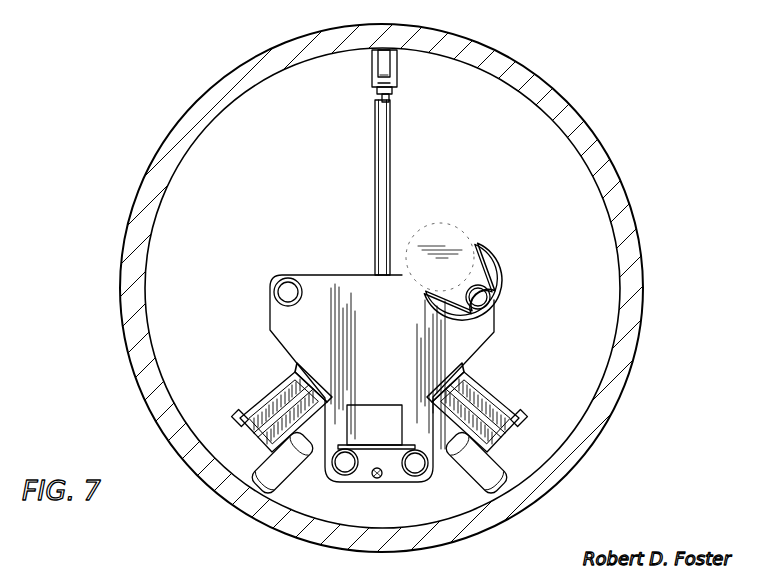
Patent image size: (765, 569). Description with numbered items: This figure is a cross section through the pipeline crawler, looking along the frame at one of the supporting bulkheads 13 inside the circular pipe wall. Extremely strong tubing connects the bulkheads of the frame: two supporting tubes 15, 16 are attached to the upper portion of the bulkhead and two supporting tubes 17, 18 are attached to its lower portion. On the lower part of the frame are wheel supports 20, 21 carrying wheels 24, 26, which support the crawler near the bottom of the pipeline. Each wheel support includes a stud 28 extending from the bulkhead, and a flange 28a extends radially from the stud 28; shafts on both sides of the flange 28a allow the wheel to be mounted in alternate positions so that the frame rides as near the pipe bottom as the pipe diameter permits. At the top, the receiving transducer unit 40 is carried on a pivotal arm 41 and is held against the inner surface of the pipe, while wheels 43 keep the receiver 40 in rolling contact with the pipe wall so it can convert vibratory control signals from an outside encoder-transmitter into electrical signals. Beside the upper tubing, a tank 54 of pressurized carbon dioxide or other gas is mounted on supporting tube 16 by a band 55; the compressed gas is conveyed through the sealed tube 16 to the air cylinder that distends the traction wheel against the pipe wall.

The supporting bulkhead 13 is at (280, 312).
The supporting tube 15 is at (287, 291).
The supporting tube 16 is at (483, 300).
The supporting tube 17 is at (343, 478).
The supporting tube 18 is at (417, 478).
The wheel support 20 is at (523, 408).
The wheel support 21 is at (257, 407).
The wheel 24 is at (507, 490).
The wheel 26 is at (257, 490).
The stud 28 is at (297, 362).
The flange 28a is at (283, 405).
The receiving transducer unit 40 is at (397, 83).
The pivotal arm 41 is at (390, 153).
The wheels 43 is at (383, 65).
The tank 54 is at (432, 237).
The band 55 is at (487, 265).